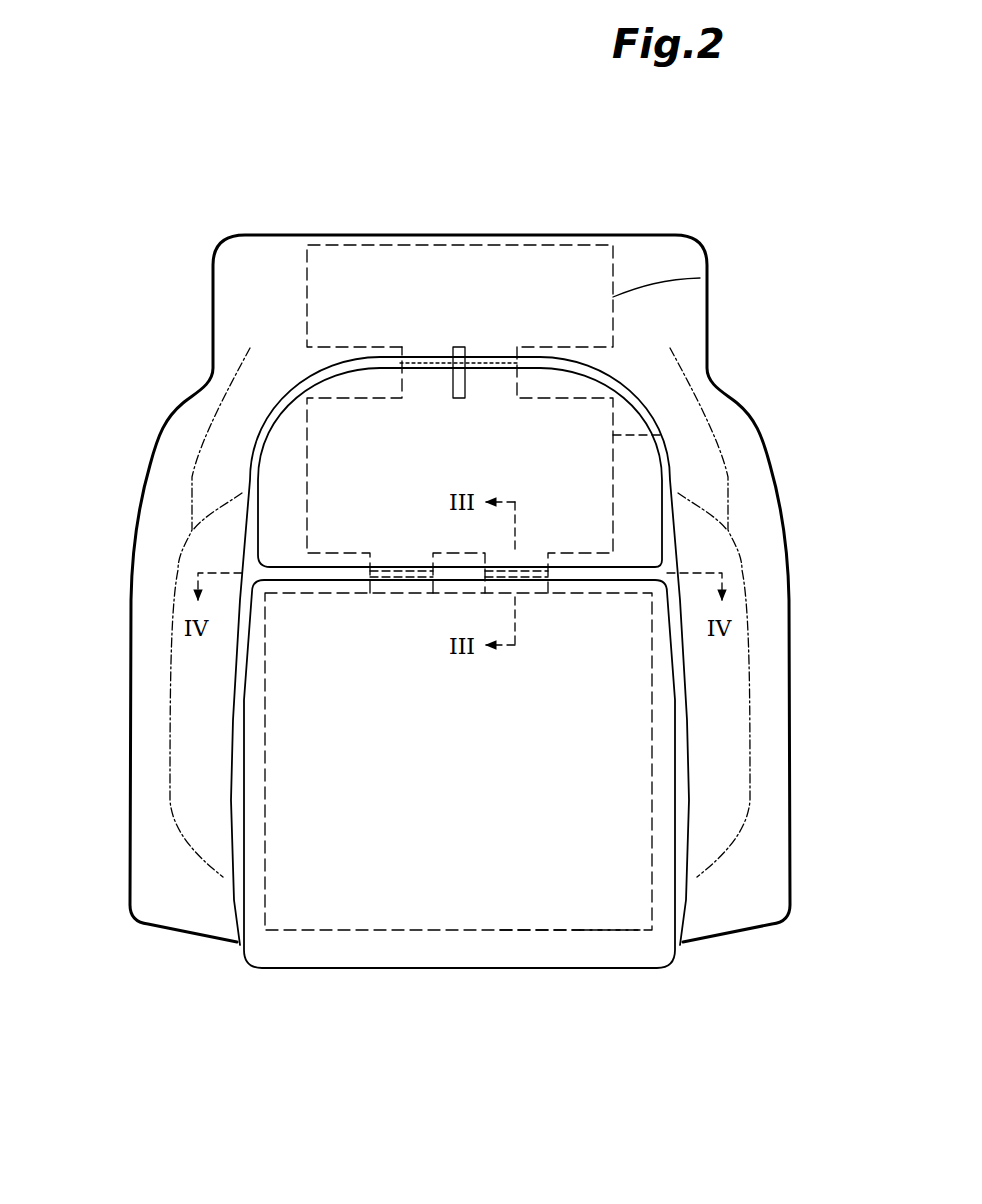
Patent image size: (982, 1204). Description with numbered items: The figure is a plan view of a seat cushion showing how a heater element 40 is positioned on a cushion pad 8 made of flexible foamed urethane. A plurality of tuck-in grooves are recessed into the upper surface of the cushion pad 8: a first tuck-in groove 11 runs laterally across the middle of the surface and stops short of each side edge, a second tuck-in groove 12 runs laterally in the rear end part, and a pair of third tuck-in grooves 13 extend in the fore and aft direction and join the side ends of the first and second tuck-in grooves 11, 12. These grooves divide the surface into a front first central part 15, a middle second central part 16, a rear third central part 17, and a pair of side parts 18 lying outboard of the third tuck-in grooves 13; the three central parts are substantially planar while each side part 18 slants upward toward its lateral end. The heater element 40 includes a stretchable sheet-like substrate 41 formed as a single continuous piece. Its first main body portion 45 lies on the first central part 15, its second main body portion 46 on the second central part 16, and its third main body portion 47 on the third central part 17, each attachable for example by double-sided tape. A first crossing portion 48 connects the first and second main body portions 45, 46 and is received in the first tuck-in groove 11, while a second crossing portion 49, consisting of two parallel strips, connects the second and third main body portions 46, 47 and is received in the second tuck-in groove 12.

The cushion pad 8 is at (752, 937).
The first tuck-in groove 11 is at (303, 572).
The second tuck-in groove 12 is at (372, 364).
The third tuck-in grooves 13 is at (233, 672).
The first central part 15 is at (477, 895).
The second central part 16 is at (565, 473).
The third central part 17 is at (505, 270).
The side parts 18 is at (185, 788).
The heater element 40 is at (541, 942).
The substrate 41 is at (594, 942).
The first main body portion 45 is at (388, 930).
The second main body portion 46 is at (660, 435).
The third main body portion 47 is at (700, 278).
The first crossing portion 48 is at (382, 615).
The second crossing portion 49 is at (465, 390).